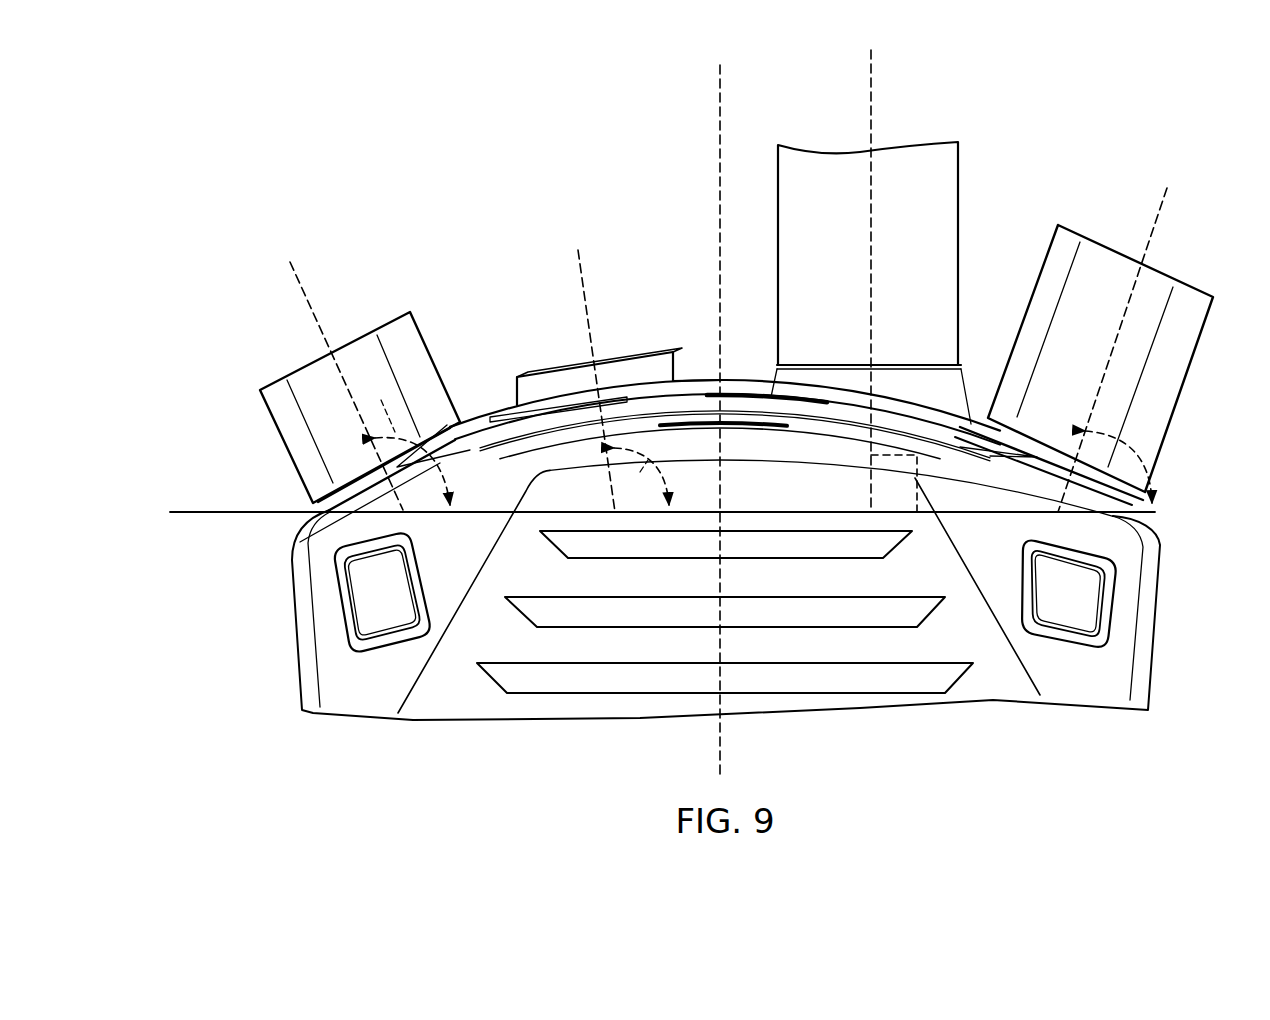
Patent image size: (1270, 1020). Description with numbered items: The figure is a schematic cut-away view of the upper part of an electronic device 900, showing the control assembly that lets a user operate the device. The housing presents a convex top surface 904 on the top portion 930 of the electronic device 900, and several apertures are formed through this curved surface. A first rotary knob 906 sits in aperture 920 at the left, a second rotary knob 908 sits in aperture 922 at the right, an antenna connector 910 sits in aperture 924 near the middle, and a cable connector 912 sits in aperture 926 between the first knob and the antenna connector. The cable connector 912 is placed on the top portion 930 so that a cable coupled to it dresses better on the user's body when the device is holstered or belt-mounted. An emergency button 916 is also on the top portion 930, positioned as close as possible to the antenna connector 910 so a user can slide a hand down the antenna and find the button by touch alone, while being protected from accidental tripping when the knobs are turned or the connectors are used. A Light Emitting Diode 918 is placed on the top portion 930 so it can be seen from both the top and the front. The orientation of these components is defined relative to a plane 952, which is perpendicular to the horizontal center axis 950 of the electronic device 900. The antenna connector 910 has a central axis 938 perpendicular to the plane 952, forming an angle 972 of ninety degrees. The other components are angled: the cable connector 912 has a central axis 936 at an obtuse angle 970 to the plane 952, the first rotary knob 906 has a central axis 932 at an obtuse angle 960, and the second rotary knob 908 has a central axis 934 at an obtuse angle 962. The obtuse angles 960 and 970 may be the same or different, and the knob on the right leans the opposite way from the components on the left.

The electronic device 900 is at (256, 168).
The convex top surface 904 is at (817, 448).
The rotary knob 906 is at (257, 404).
The rotary knob 908 is at (1169, 406).
The antenna connector 910 is at (776, 359).
The cable connector 912 is at (519, 364).
The emergency button 916 is at (777, 411).
The Light Emitting Diode 918 is at (520, 421).
The aperture 920 is at (356, 493).
The aperture 922 is at (1086, 493).
The aperture 924 is at (856, 419).
The aperture 926 is at (677, 404).
The top portion 930 is at (245, 635).
The central axis 932 is at (301, 318).
The central axis 934 is at (1158, 206).
The central axis 936 is at (573, 264).
The central axis 938 is at (867, 78).
The horizontal center axis 950 is at (716, 88).
The plane 952 is at (207, 507).
The obtuse angle 960 is at (407, 441).
The obtuse angle 962 is at (1162, 455).
The obtuse angle 970 is at (641, 476).
The angle 972 is at (890, 498).